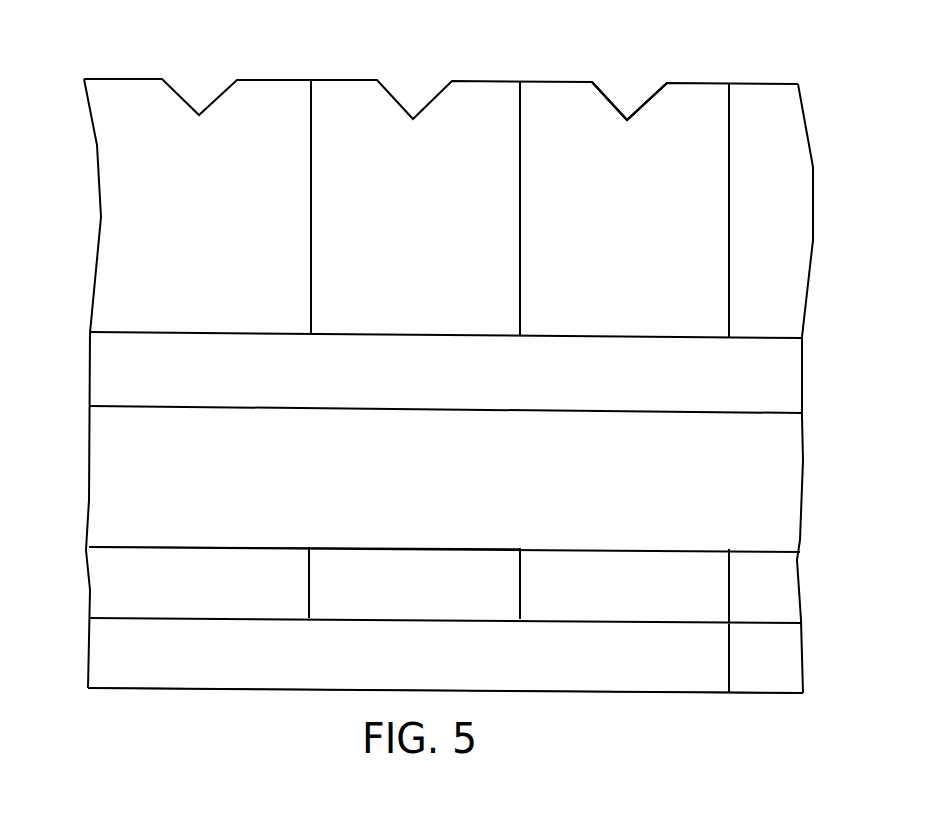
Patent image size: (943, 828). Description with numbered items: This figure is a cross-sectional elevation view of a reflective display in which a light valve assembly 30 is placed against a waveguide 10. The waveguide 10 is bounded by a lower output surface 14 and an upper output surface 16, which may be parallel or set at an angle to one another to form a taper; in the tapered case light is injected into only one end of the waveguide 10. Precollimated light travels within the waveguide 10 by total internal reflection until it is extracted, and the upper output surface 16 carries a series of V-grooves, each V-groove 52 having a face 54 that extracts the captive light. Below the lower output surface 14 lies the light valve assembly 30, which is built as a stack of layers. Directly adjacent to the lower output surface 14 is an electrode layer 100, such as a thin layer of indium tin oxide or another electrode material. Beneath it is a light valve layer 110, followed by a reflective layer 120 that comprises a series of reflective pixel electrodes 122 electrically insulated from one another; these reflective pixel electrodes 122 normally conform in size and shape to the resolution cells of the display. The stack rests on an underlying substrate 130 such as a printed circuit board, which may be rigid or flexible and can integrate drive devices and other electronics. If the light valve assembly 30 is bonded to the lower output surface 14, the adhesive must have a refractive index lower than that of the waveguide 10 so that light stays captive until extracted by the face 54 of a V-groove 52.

The waveguide 10 is at (792, 238).
The lower output surface 14 is at (770, 337).
The upper output surface 16 is at (695, 84).
The light valve assembly 30 is at (82, 340).
The V-groove 52 is at (622, 101).
The face of V-groove 54 is at (612, 110).
The electrode layer 100 is at (778, 376).
The light valve layer 110 is at (780, 483).
The reflective layer 120 is at (773, 583).
The reflective pixel electrodes 122 is at (179, 591).
The substrate 130 is at (790, 654).